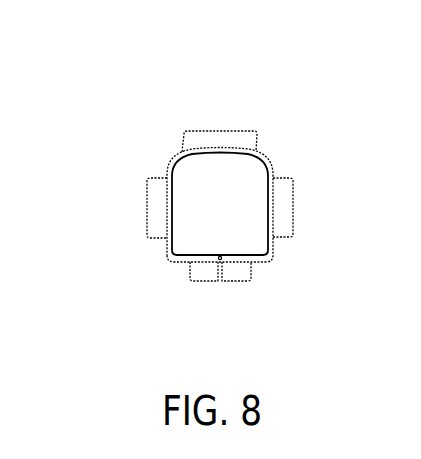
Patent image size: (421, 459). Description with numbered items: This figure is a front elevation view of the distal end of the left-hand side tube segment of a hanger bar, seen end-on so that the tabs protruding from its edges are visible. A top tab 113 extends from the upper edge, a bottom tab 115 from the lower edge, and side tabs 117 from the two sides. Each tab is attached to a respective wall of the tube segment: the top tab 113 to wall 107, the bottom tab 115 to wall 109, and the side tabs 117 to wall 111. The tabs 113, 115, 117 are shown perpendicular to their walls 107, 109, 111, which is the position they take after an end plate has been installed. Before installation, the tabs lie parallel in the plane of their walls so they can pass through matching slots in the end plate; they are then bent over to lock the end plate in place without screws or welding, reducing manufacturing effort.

The wall 107 is at (250, 158).
The wall 109 is at (256, 262).
The wall 111 is at (265, 245).
The top tab 113 is at (216, 138).
The bottom tab 115 is at (200, 267).
The side tab 117 is at (152, 198).